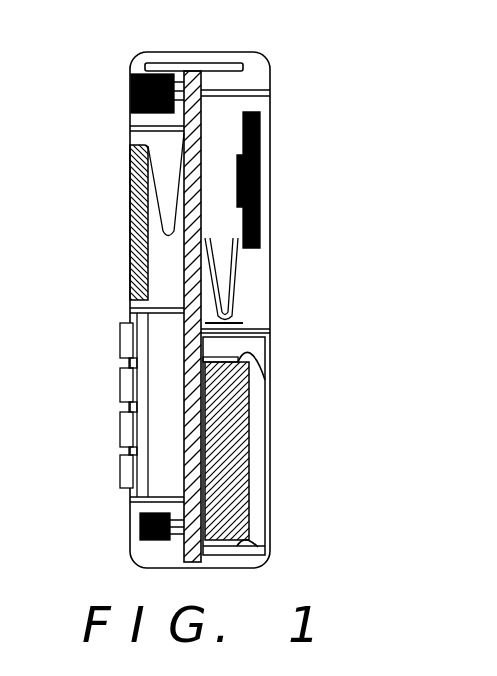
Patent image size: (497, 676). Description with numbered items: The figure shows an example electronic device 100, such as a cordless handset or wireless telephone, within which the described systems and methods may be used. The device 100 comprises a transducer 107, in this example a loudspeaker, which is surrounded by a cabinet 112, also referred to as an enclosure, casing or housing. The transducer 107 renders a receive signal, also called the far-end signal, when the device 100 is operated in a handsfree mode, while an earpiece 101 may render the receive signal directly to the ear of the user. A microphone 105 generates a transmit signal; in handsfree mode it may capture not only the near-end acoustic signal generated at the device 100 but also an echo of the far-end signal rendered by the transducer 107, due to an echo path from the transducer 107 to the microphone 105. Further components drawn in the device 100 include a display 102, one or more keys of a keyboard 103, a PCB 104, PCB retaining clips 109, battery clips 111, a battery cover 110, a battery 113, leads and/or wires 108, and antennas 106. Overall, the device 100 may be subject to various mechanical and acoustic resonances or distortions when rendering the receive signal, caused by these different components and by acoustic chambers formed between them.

The electronic device 100 is at (323, 53).
The earpiece 101 is at (131, 90).
The display 102 is at (131, 200).
The keys of a keyboard 103 is at (120, 387).
The PCB 104 is at (184, 443).
The microphone 105 is at (142, 525).
The antennas 106 is at (215, 62).
The transducer 107 is at (262, 172).
The leads and/or wires 108 is at (239, 263).
The PCB retaining clips 109 is at (243, 323).
The battery cover 110 is at (265, 443).
The battery clips 111 is at (265, 380).
The cabinet 112 is at (271, 131).
The battery 113 is at (236, 486).